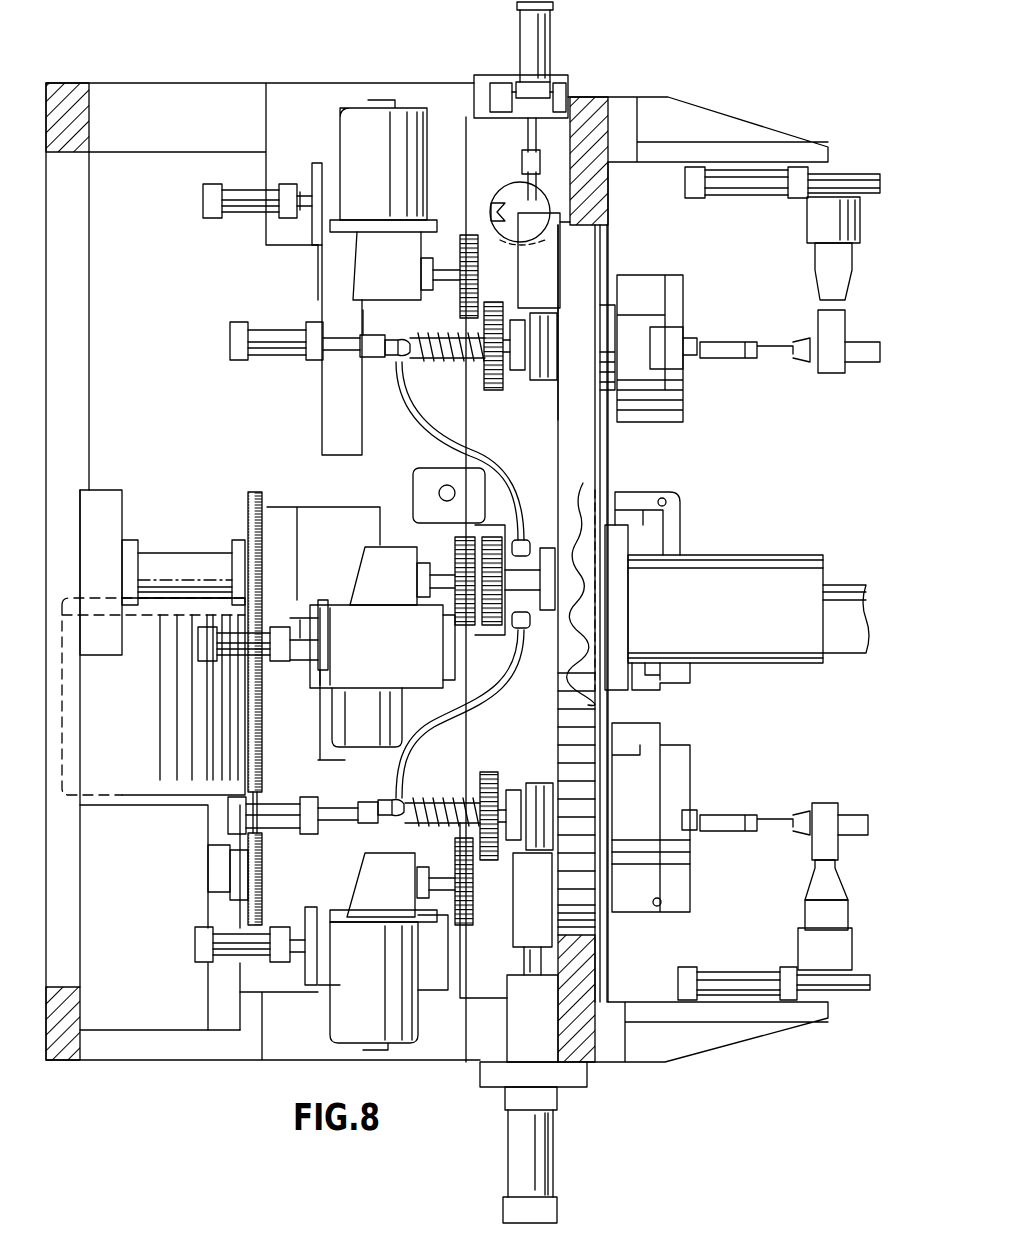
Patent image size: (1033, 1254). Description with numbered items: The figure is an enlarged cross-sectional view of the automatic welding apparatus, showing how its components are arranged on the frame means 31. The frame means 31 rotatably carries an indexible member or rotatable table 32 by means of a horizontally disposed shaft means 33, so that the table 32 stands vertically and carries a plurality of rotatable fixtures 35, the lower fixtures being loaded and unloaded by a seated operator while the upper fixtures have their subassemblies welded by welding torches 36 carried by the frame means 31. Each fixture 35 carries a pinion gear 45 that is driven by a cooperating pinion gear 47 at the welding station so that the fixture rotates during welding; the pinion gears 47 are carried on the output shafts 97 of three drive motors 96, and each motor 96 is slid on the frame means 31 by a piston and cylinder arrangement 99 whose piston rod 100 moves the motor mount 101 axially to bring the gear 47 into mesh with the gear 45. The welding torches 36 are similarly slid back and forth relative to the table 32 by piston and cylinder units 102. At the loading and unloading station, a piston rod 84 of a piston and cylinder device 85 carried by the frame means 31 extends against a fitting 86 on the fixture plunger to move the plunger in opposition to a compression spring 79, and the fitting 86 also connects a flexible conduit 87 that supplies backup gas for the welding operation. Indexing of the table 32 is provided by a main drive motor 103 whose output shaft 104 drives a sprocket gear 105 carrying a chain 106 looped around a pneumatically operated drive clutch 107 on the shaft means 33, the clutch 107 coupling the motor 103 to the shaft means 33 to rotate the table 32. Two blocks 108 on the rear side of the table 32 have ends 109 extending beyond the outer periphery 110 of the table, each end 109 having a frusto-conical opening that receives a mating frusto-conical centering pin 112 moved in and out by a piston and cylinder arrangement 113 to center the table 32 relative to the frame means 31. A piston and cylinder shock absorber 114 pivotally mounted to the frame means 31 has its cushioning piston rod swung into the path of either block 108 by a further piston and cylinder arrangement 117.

The frame means 31 is at (183, 94).
The rotatable table 32 is at (590, 468).
The shaft means 33 is at (190, 560).
The rotatable fixtures 35 is at (690, 396).
The welding torches 36 is at (728, 342).
The pinion gear 45 is at (485, 387).
The pinion gear 47 is at (476, 278).
The compression spring 79 is at (450, 358).
The piston rod 84 is at (380, 357).
The piston and cylinder device 85 is at (276, 332).
The fitting 86 is at (400, 342).
The flexible conduit 87 is at (432, 436).
The drive motors 96 is at (340, 140).
The output shafts 97 is at (438, 285).
The piston and cylinder arrangement 99 is at (250, 210).
The piston rods 100 is at (310, 190).
The motor mount 101 is at (308, 240).
The piston and cylinder units 102 is at (757, 194).
The main drive motor 103 is at (148, 788).
The output shaft 104 is at (208, 872).
The sprocket gear 105 is at (262, 863).
The chain 106 is at (260, 744).
The drive clutch 107 is at (338, 520).
The blocks 108 is at (544, 266).
The ends 109 is at (521, 198).
The outer periphery 110 is at (588, 243).
The centering pin 112 is at (520, 978).
The piston and cylinder arrangement 113 is at (506, 1135).
The shock absorber 114 is at (511, 203).
The piston and cylinder arrangement 117 is at (550, 52).